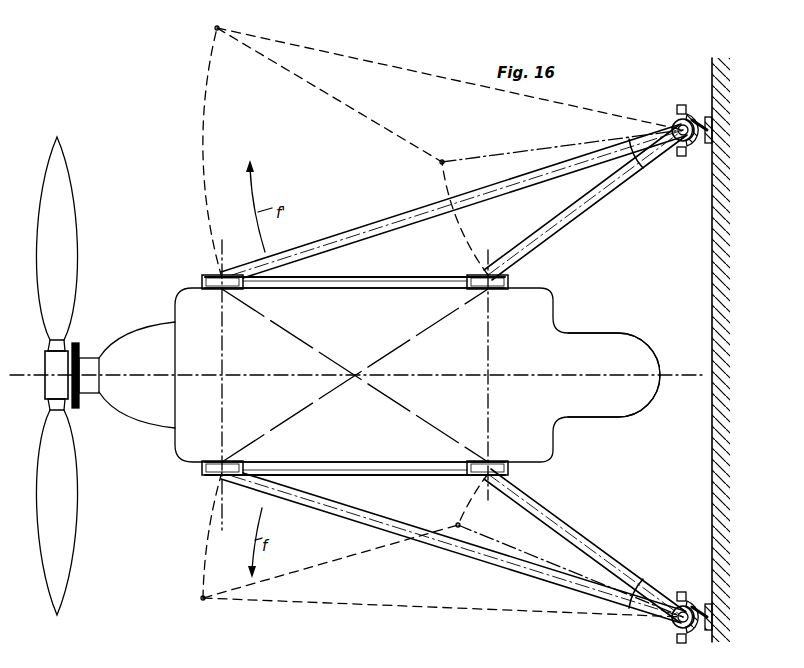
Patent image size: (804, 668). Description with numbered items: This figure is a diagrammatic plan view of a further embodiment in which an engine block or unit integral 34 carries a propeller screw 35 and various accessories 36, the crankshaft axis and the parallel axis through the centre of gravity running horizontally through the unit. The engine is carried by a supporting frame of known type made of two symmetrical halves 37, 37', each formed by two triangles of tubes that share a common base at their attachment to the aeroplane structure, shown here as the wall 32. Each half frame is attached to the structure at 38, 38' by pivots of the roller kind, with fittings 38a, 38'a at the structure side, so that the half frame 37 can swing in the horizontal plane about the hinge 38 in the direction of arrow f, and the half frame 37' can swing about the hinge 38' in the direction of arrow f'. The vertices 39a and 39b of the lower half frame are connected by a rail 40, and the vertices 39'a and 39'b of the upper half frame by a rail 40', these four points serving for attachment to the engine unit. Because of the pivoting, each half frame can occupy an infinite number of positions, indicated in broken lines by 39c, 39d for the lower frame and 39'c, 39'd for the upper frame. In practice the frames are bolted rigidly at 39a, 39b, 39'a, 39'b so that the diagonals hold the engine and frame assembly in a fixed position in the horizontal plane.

The wall 32 is at (716, 428).
The engine block 34 is at (192, 447).
The propeller screw 35 is at (60, 262).
The accessories 36 is at (618, 410).
The half frame 37 is at (453, 546).
The half frame 37' is at (454, 202).
The common base attachment 38 is at (675, 618).
The common base attachment 38' is at (677, 130).
The lower pivot bracket 38a is at (693, 600).
The upper pivot bracket 38'a is at (694, 150).
The vertex attachment point 39a is at (210, 479).
The vertex attachment point 39'a is at (213, 271).
The vertex attachment point 39b is at (506, 472).
The vertex attachment point 39'b is at (508, 276).
The displaced position 39c is at (425, 544).
The displaced position 39'c is at (437, 142).
The displaced position 39d is at (569, 545).
The displaced position 39'd is at (556, 202).
The rail 40 is at (355, 481).
The rail 40' is at (355, 266).